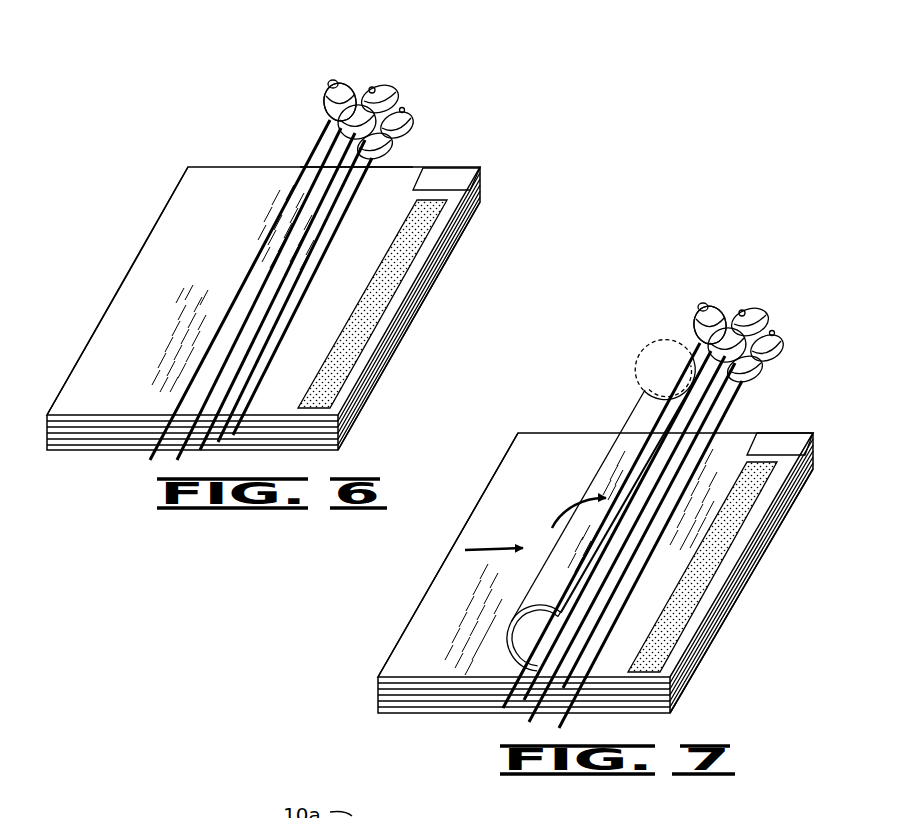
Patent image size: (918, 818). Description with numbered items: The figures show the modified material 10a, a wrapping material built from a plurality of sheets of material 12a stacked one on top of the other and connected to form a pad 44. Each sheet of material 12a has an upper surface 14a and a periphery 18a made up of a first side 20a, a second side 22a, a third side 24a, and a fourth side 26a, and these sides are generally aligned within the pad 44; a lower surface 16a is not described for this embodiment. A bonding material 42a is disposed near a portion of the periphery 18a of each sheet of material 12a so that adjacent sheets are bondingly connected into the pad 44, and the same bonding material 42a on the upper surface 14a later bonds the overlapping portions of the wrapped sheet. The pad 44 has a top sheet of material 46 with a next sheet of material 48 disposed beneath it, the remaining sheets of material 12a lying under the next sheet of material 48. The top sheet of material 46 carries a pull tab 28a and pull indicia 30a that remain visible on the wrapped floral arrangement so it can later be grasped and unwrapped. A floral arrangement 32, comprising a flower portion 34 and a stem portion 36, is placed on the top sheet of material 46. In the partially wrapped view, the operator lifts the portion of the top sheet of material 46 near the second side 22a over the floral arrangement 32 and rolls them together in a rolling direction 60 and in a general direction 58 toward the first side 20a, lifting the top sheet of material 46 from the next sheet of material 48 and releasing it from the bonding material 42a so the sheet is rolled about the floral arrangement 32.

In FIG. 6, the modified material 10a is at (180, 88).
In FIG. 7, the modified material 10a is at (677, 283).
In FIG. 6, the sheet of material 12a is at (220, 162).
In FIG. 7, the sheet of material 12a is at (752, 430).
In FIG. 6, the upper surface 14a is at (180, 230).
In FIG. 7, the rolled peeled layer 16a is at (670, 372).
In FIG. 6, the periphery 18a is at (110, 302).
In FIG. 7, the periphery 18a is at (687, 415).
In FIG. 6, the first side 20a is at (407, 300).
In FIG. 7, the first side 20a is at (740, 563).
In FIG. 6, the second side 22a is at (76, 357).
In FIG. 7, the second side 22a is at (665, 455).
In FIG. 6, the third side 24a is at (413, 167).
In FIG. 6, the fourth side 26a is at (97, 420).
In FIG. 7, the fourth side 26a is at (423, 690).
In FIG. 6, the pull tab 28a is at (453, 167).
In FIG. 7, the pull tab 28a is at (813, 434).
In FIG. 6, the pull indicia 30a is at (473, 172).
In FIG. 7, the pull indicia 30a is at (808, 440).
In FIG. 6, the floral arrangement 32 is at (335, 72).
In FIG. 7, the floral arrangement 32 is at (750, 312).
In FIG. 6, the flower portion 34 is at (332, 88).
In FIG. 7, the flower portion 34 is at (700, 320).
In FIG. 6, the stem portion 36 is at (147, 457).
In FIG. 7, the stem portion 36 is at (510, 695).
In FIG. 6, the bonding material 42a is at (408, 253).
In FIG. 7, the bonding material 42a is at (740, 515).
In FIG. 6, the pad 44 is at (373, 372).
In FIG. 7, the pad 44 is at (708, 640).
In FIG. 6, the top sheet of material 46 is at (143, 283).
In FIG. 7, the top sheet of material 46 is at (728, 447).
In FIG. 7, the next sheet of material 48 is at (400, 672).
In FIG. 7, the general direction 58 is at (483, 550).
In FIG. 7, the rolling direction 60 is at (566, 505).